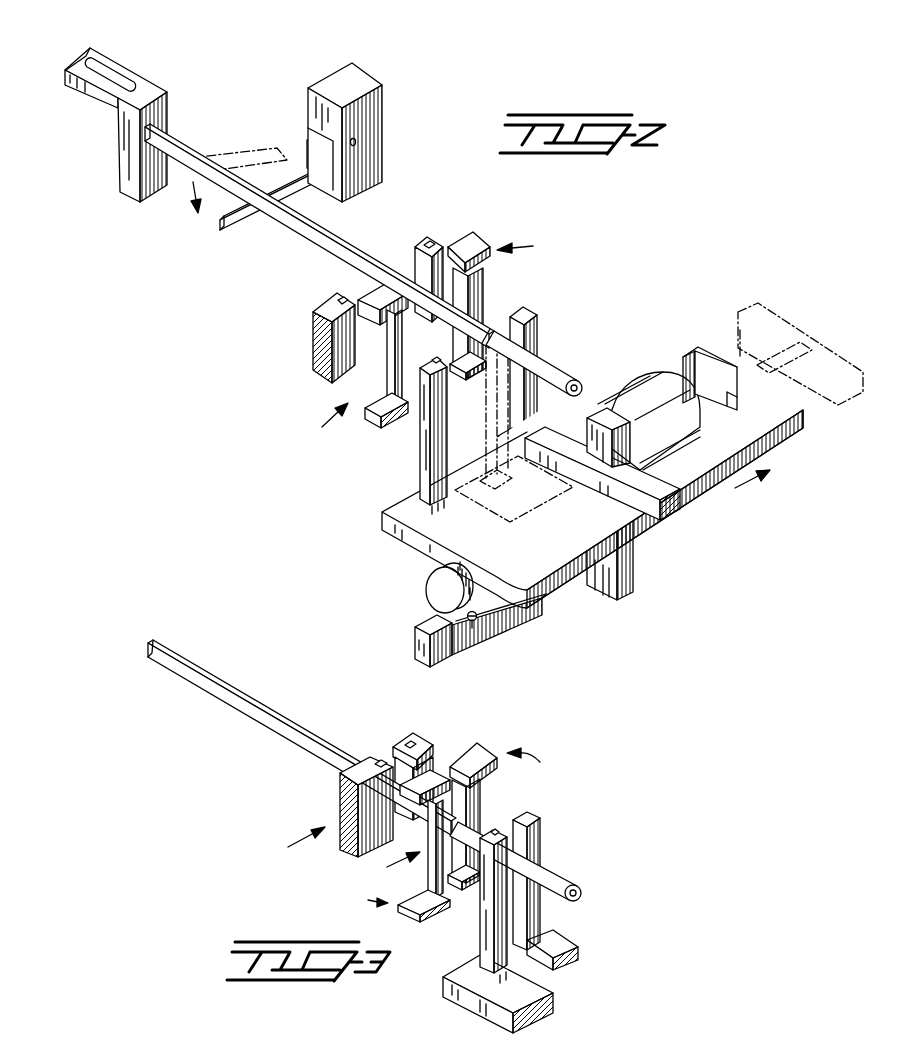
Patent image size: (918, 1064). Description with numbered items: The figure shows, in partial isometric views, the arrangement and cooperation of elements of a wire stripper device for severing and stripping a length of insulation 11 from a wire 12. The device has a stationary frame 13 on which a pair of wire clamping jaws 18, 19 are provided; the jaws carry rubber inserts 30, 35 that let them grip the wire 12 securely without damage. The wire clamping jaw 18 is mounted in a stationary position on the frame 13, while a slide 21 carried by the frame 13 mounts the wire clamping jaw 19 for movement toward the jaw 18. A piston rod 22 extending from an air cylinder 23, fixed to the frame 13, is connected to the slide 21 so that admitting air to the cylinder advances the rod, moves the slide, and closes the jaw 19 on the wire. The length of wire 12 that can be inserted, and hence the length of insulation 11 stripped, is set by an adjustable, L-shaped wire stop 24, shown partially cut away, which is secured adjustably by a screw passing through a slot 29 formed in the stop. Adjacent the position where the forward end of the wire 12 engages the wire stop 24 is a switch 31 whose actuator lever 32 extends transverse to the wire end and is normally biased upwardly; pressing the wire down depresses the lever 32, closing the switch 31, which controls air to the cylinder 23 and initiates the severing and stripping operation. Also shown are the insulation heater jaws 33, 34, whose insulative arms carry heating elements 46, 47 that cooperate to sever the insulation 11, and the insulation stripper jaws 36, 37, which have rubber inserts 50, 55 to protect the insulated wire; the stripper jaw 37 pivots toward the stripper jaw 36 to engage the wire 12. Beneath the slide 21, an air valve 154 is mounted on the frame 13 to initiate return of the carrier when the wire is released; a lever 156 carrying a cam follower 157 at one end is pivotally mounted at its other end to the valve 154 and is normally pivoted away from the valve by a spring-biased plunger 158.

In FIG. 2, the insulation 11 is at (345, 243).
In FIG. 3, the insulation 11 is at (223, 676).
In FIG. 2, the wire 12 is at (582, 388).
In FIG. 3, the wire 12 is at (572, 902).
In FIG. 2, the stationary frame 13 is at (634, 584).
In FIG. 2, the wire clamping jaw 18 is at (534, 333).
In FIG. 3, the wire clamping jaw 18 is at (533, 842).
In FIG. 2, the wire clamping jaw 19 is at (421, 449).
In FIG. 3, the wire clamping jaw 19 is at (488, 937).
In FIG. 2, the slide 21 is at (773, 455).
In FIG. 2, the piston rod 22 is at (693, 370).
In FIG. 2, the air cylinder 23 is at (652, 390).
In FIG. 2, the wire stop 24 is at (155, 92).
In FIG. 2, the slot 29 is at (92, 66).
In FIG. 2, the rubber insert 30 is at (517, 307).
In FIG. 3, the rubber insert 30 is at (526, 812).
In FIG. 2, the switch 31 is at (384, 102).
In FIG. 2, the actuator lever 32 is at (222, 152).
In FIG. 2, the insulation heater jaw 33 is at (527, 247).
In FIG. 3, the insulation heater jaw 33 is at (536, 761).
In FIG. 2, the insulation heater jaw 34 is at (325, 428).
In FIG. 3, the insulation heater jaw 34 is at (384, 879).
In FIG. 2, the rubber insert 35 is at (436, 360).
In FIG. 3, the rubber insert 35 is at (500, 830).
In FIG. 2, the insulation stripper jaw 36 is at (440, 246).
In FIG. 3, the insulation stripper jaw 36 is at (420, 745).
In FIG. 2, the insulation stripper jaw 37 is at (315, 303).
In FIG. 3, the insulation stripper jaw 37 is at (343, 779).
In FIG. 2, the heating element 46 is at (467, 291).
In FIG. 3, the heating element 46 is at (472, 816).
In FIG. 2, the heating element 47 is at (390, 366).
In FIG. 3, the heating element 47 is at (424, 846).
In FIG. 2, the rubber insert 50 is at (424, 245).
In FIG. 3, the rubber insert 50 is at (405, 745).
In FIG. 2, the rubber insert 55 is at (345, 294).
In FIG. 3, the rubber insert 55 is at (381, 760).
In FIG. 2, the air valve 154 is at (515, 637).
In FIG. 2, the lever 156 is at (440, 614).
In FIG. 2, the cam follower 157 is at (428, 592).
In FIG. 2, the plunger 158 is at (478, 622).